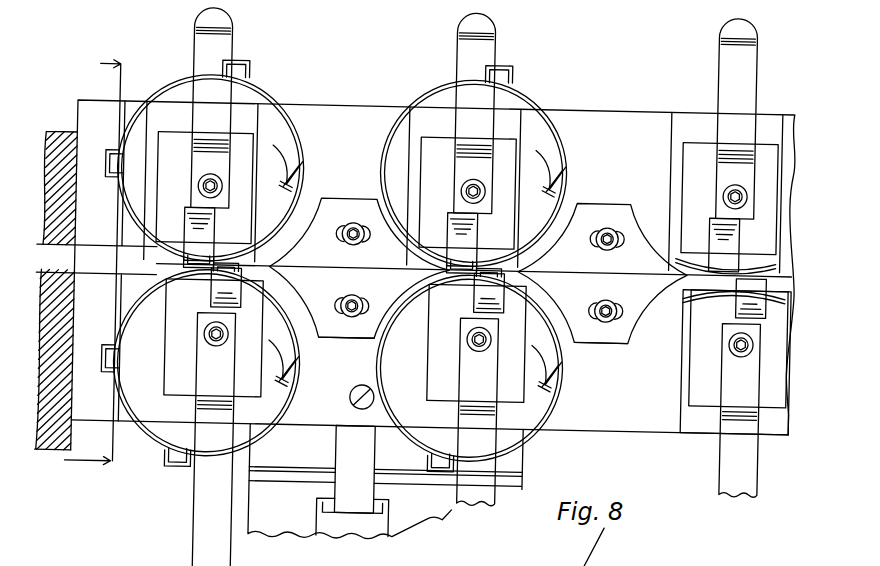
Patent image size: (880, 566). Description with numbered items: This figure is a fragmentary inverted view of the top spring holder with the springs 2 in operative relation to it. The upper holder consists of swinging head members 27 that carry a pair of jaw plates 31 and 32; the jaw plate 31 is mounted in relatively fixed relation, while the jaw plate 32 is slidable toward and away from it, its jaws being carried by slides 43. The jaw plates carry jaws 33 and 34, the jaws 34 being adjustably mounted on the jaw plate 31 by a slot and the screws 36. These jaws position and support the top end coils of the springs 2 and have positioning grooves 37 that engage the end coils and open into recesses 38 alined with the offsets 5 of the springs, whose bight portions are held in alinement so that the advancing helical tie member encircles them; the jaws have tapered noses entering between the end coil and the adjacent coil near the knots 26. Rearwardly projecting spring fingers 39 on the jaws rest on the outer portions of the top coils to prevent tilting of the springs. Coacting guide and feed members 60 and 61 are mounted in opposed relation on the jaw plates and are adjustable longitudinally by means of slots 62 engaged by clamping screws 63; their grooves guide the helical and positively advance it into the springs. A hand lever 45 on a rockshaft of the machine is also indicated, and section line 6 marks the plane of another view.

The spring 2 is at (288, 187).
The offset 5 is at (248, 65).
The section line 6- 6 is at (88, 264).
The knot 26 is at (290, 173).
The swinging head member 27 is at (293, 517).
The jaw plate 31 is at (626, 130).
The jaw plate 32 is at (578, 425).
The jaw 33 is at (178, 348).
The jaw 34 is at (253, 140).
The screw 36 is at (207, 333).
The positioning groove 37 is at (253, 273).
The recess 38 is at (226, 270).
The spring finger 39 is at (228, 42).
The slide 43 is at (358, 497).
The hand lever 45 is at (758, 565).
The guide and feed member 60 is at (347, 207).
The guide and feed member 61 is at (337, 333).
The slot 62 is at (618, 305).
The clamping screw 63 is at (598, 303).